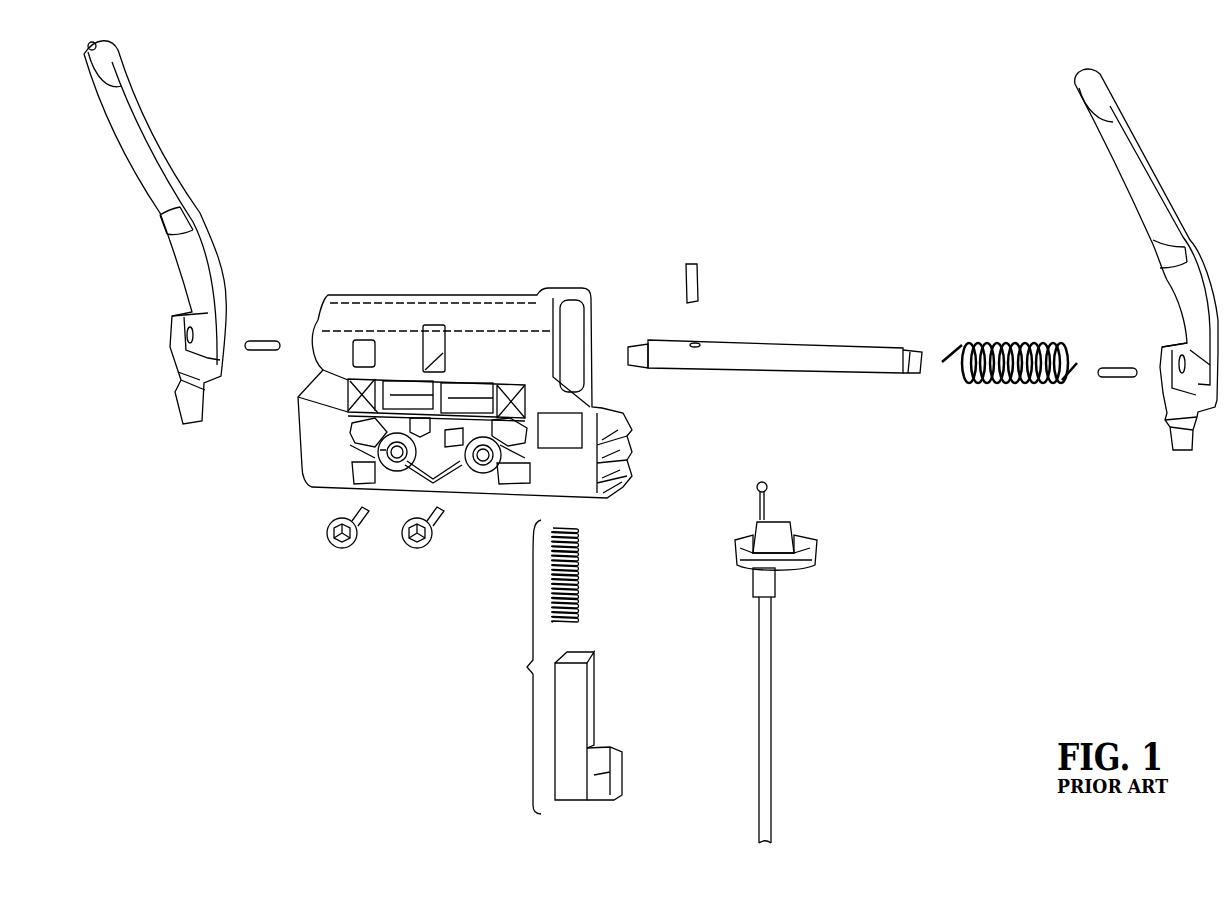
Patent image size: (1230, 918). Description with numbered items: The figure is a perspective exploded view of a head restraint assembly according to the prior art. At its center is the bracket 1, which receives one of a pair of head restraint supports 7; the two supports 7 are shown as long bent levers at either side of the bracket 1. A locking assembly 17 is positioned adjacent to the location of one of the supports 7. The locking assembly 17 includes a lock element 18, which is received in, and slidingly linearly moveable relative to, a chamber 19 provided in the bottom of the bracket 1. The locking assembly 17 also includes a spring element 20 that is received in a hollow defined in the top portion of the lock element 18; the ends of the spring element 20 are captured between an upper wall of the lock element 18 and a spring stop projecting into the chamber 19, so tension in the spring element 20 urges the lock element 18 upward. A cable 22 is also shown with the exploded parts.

The bracket 1 is at (476, 412).
The head restraint support 7 is at (178, 137).
The locking assembly 17 is at (581, 667).
The lock element 18 is at (593, 687).
The chamber 19 is at (603, 501).
The spring element 20 is at (582, 583).
The cable 22 is at (765, 730).